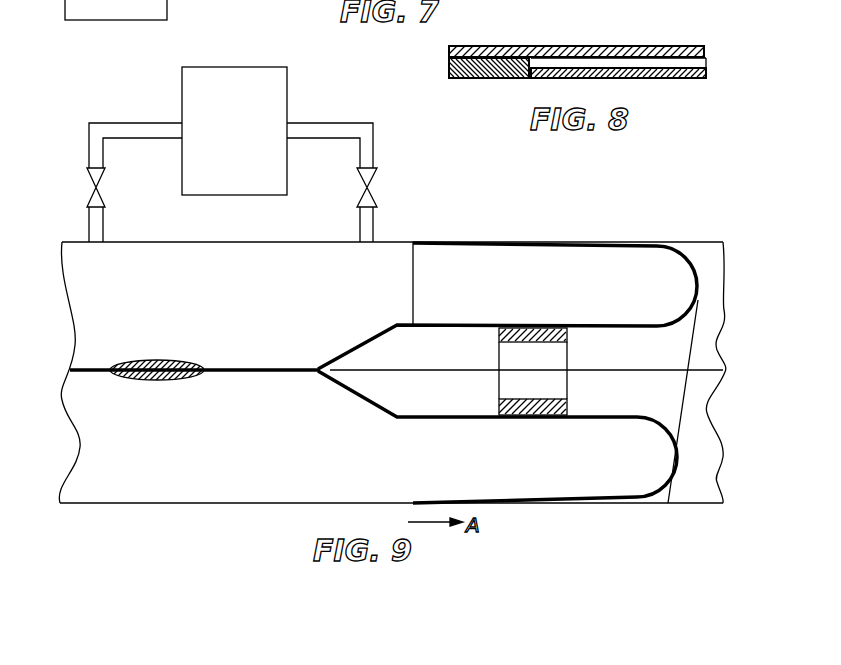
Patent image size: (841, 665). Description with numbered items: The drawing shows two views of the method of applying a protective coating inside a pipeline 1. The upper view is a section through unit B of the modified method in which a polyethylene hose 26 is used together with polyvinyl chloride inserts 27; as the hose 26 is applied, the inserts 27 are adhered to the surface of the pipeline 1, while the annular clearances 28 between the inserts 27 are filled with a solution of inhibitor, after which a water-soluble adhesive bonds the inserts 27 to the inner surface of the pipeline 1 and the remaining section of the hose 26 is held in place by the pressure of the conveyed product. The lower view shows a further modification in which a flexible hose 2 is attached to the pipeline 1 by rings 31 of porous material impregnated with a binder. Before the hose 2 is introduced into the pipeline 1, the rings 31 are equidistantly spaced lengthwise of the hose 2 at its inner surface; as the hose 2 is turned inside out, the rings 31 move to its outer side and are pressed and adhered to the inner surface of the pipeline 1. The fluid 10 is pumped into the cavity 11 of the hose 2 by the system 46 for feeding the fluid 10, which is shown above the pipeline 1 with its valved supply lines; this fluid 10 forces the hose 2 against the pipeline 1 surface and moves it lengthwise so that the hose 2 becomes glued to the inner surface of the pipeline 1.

In FIG. 8, the pipeline 1 is at (572, 52).
In FIG. 9, the pipeline 1 is at (603, 229).
In FIG. 9, the flexible hose 2 is at (282, 372).
In FIG. 9, the fluid 10 is at (383, 260).
In FIG. 9, the cavity 11 is at (482, 263).
In FIG. 8, the polyethylene hose 26 is at (674, 72).
In FIG. 8, the polyvinyl chloride inserts 27 is at (486, 60).
In FIG. 8, the annular clearances 28 is at (622, 63).
In FIG. 9, the rings 31 is at (167, 381).
In FIG. 9, the system for feeding the fluid 46 is at (192, 95).